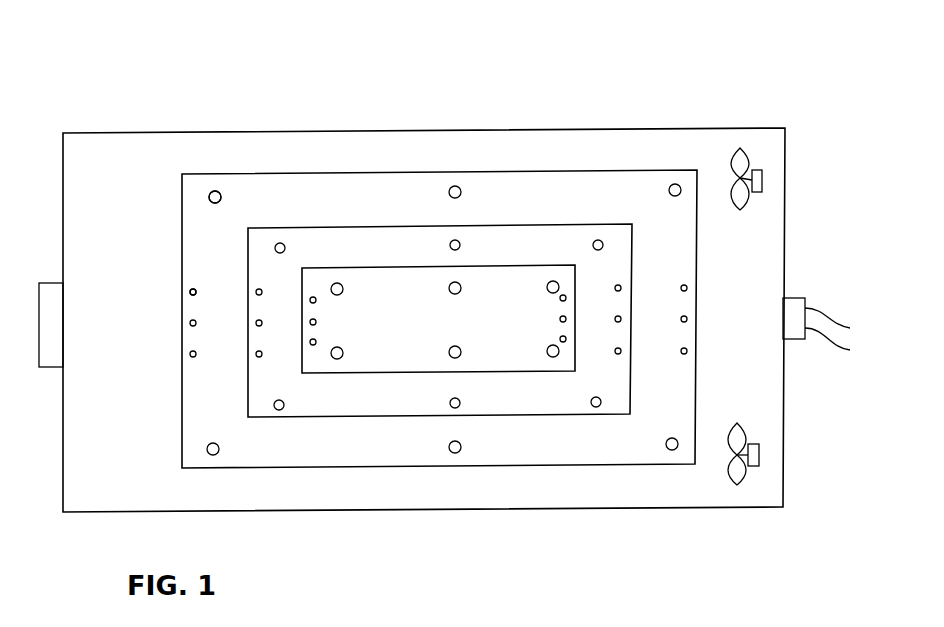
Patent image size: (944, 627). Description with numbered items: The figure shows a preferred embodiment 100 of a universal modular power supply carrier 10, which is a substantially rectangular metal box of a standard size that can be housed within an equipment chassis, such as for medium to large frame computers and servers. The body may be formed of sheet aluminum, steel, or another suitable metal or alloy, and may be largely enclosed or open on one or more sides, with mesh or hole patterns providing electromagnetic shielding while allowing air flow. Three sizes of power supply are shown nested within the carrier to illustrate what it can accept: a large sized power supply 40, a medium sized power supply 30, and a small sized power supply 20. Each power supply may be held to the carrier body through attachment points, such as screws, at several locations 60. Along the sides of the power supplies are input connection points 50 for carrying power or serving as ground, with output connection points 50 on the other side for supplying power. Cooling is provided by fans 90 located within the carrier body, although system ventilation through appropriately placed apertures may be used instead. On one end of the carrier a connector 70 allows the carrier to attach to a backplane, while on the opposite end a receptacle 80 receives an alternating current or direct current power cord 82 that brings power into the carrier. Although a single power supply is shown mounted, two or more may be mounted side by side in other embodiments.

The preferred embodiment 100 is at (740, 53).
The universal modular power supply carrier 10 is at (735, 507).
The small sized power supply 20 is at (368, 373).
The medium sized power supply 30 is at (370, 228).
The large sized power supply 40 is at (293, 172).
The connection points 50 is at (190, 291).
The attachment point locations 60 is at (211, 194).
The connector 70 is at (50, 367).
The receptacle 80 is at (795, 298).
The power cord 82 is at (837, 340).
The fans 90 is at (763, 172).